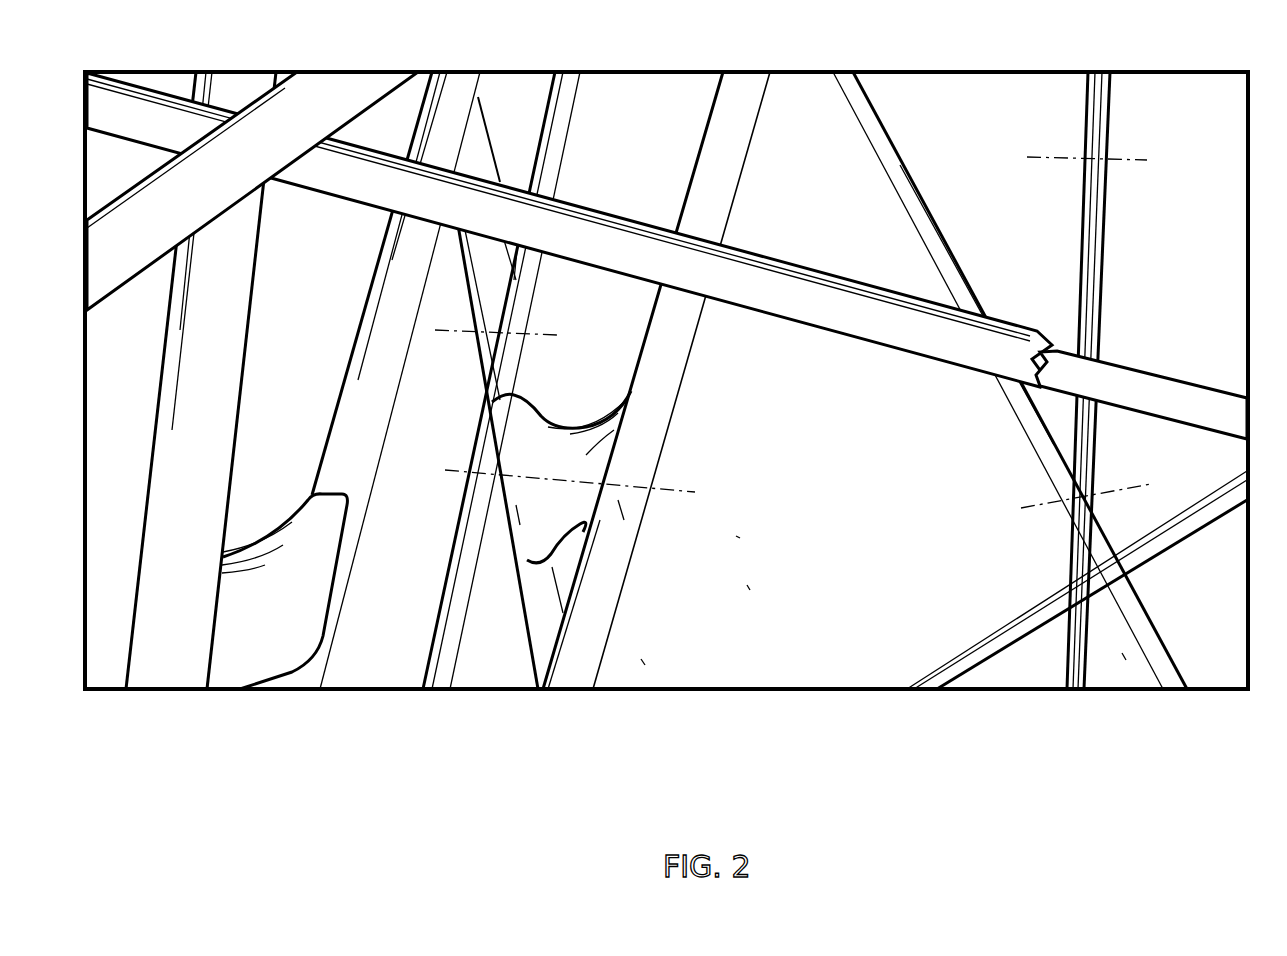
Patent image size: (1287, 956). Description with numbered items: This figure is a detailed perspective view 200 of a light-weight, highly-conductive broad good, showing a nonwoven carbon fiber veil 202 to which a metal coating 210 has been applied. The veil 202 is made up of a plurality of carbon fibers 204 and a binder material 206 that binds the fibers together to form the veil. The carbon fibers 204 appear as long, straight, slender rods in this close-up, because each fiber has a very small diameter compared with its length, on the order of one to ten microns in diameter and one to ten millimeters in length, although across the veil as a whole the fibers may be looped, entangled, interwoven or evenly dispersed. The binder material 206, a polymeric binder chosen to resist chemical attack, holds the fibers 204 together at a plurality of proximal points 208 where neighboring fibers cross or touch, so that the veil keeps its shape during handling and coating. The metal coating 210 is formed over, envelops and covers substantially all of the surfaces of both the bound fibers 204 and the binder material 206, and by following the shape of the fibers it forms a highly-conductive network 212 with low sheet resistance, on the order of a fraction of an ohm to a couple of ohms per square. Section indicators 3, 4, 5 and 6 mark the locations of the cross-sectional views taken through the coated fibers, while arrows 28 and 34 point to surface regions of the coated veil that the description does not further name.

The detailed perspective view 200 is at (1165, 72).
The nonwoven carbon fiber veil 202 is at (1129, 665).
The carbon fibers 204 is at (246, 72).
The binder material 206 is at (311, 612).
The proximal points 208 is at (513, 520).
The metal coating 210 is at (867, 332).
The highly-conductive network 212 is at (648, 671).
The surface 28 is at (749, 542).
The surface 34 is at (754, 597).
The section line 3- 3 is at (1035, 140).
The section line 4- 4 is at (447, 455).
The section line 5- 5 is at (1020, 492).
The section line 6- 6 is at (443, 320).